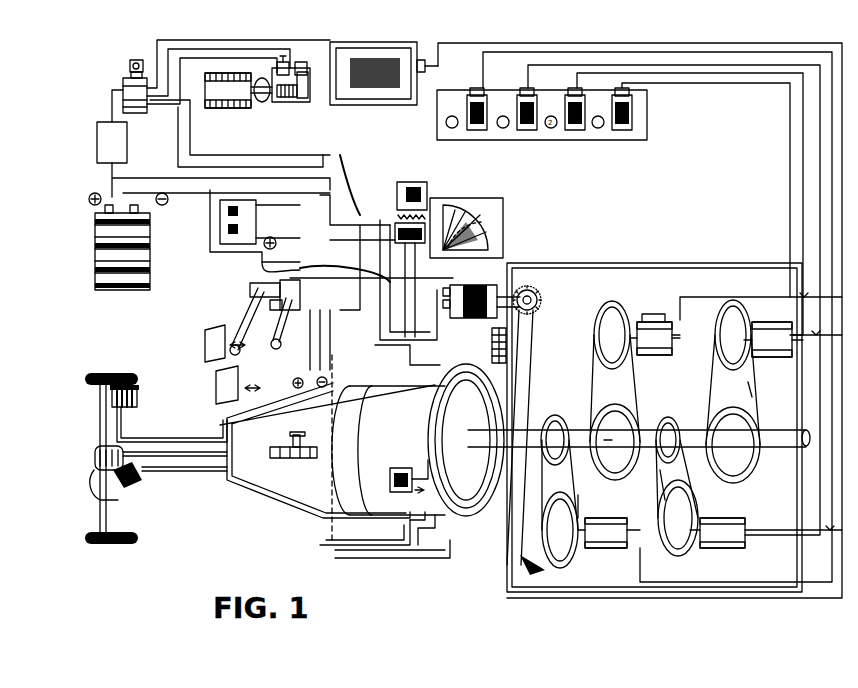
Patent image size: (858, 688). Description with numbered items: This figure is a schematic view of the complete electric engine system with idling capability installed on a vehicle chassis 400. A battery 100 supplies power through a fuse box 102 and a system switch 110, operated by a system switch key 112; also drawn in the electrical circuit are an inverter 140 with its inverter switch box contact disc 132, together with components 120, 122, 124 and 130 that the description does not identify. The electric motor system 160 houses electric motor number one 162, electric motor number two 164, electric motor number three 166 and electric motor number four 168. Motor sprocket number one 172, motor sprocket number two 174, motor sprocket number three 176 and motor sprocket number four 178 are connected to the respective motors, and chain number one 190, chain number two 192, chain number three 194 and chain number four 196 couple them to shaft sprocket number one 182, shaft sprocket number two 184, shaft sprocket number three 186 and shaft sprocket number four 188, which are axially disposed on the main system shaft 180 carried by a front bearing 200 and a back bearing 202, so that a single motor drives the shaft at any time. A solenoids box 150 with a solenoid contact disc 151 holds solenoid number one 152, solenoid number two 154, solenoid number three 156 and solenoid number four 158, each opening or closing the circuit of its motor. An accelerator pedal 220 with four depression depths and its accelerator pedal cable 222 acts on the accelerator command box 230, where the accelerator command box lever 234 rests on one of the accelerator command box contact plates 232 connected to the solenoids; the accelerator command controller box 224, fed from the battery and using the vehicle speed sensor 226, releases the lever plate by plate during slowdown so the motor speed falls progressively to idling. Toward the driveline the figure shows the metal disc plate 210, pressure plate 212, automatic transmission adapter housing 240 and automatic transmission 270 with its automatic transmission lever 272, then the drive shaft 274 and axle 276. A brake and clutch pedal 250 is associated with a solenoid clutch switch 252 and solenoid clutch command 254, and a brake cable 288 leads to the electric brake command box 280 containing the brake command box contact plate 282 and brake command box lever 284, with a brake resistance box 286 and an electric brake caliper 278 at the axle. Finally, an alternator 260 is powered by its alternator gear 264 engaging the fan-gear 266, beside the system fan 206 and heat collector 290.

The battery 100 is at (110, 290).
The fuse box 102 is at (97, 145).
The system switch 110 is at (136, 114).
The system switch key 112 is at (130, 67).
The starter motor 120 is at (220, 108).
The starter switch 122 is at (278, 62).
The starter relay contact 124 is at (302, 62).
The starter coupling 130 is at (272, 104).
The inverter switch box contact disc 132 is at (304, 104).
The inverter 140 is at (398, 106).
The solenoids box 150 is at (645, 100).
The solenoid contact disc 151 is at (640, 110).
The solenoid number one 152 is at (635, 123).
The solenoid number two 154 is at (610, 138).
The solenoid number three 156 is at (510, 95).
The solenoid number four 158 is at (460, 95).
The electric motor system 160 is at (628, 263).
The electric motor number one 162 is at (660, 320).
The electric motor number two 164 is at (762, 320).
The electric motor number three 166 is at (745, 548).
The electric motor number four 168 is at (602, 550).
The motor sprocket number one 172 is at (596, 300).
The motor sprocket number two 174 is at (728, 300).
The motor sprocket number three 176 is at (668, 560).
The motor sprocket number four 178 is at (545, 568).
The main system shaft 180 is at (636, 455).
The shaft sprocket number one 182 is at (632, 410).
The shaft sprocket number two 184 is at (782, 412).
The shaft sprocket number three 186 is at (668, 417).
The shaft sprocket number four 188 is at (556, 414).
The chain number one 190 is at (620, 322).
The chain number two 192 is at (754, 376).
The chain number three 194 is at (695, 487).
The chain number four 196 is at (580, 500).
The front bearing 200 is at (806, 445).
The back bearing 202 is at (532, 375).
The system fan 206 is at (535, 582).
The metal disc plate 210 is at (478, 515).
The pressure plate 212 is at (450, 515).
The accelerator pedal 220 is at (218, 387).
The accelerator pedal cable 222 is at (453, 282).
The accelerator command controller box 224 is at (410, 182).
The vehicle speed sensor 226 is at (165, 480).
The accelerator command box 230 is at (503, 232).
The accelerator command box contact plate 232 is at (498, 215).
The accelerator command box lever 234 is at (497, 252).
The automatic transmission adapter housing 240 is at (420, 495).
The brake and clutch pedal 250 is at (200, 350).
The solenoid clutch switch 252 is at (250, 290).
The solenoid clutch command 254 is at (400, 545).
The alternator 260 is at (490, 318).
The alternator gear 264 is at (535, 292).
The fan-gear 266 is at (530, 326).
The automatic transmission 270 is at (240, 484).
The automatic transmission lever 272 is at (300, 458).
The drive shaft 274 is at (178, 468).
The axle 276 is at (145, 478).
The electric brake caliper 278 is at (136, 408).
The electric brake command box 280 is at (403, 365).
The brake command box contact plate 282 is at (290, 340).
The brake command box lever 284 is at (286, 320).
The brake resistance box 286 is at (220, 222).
The brake cable 288 is at (262, 262).
The heat collector 290 is at (492, 348).
The chassis 400 is at (77, 579).